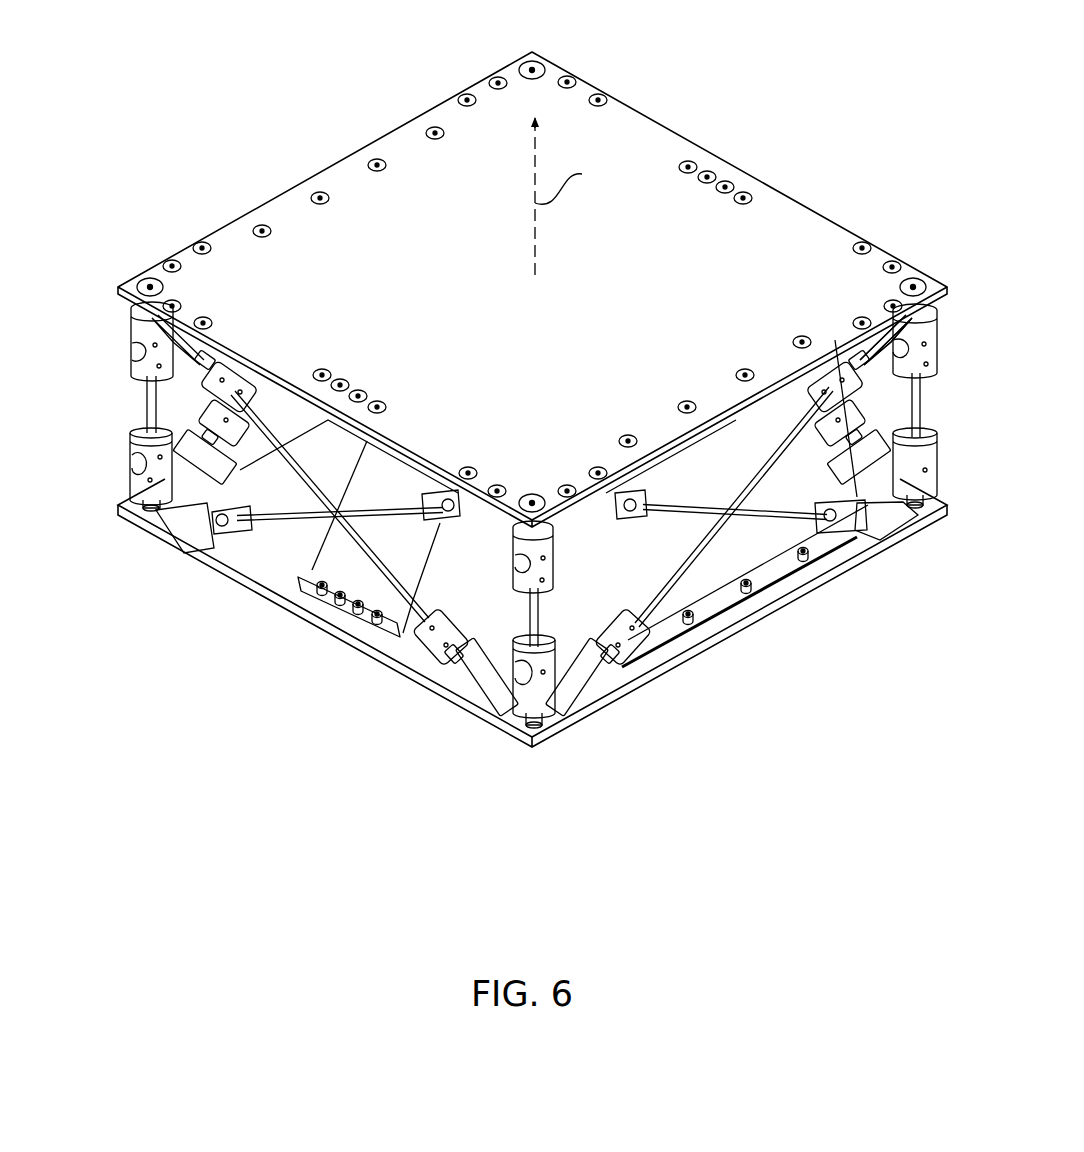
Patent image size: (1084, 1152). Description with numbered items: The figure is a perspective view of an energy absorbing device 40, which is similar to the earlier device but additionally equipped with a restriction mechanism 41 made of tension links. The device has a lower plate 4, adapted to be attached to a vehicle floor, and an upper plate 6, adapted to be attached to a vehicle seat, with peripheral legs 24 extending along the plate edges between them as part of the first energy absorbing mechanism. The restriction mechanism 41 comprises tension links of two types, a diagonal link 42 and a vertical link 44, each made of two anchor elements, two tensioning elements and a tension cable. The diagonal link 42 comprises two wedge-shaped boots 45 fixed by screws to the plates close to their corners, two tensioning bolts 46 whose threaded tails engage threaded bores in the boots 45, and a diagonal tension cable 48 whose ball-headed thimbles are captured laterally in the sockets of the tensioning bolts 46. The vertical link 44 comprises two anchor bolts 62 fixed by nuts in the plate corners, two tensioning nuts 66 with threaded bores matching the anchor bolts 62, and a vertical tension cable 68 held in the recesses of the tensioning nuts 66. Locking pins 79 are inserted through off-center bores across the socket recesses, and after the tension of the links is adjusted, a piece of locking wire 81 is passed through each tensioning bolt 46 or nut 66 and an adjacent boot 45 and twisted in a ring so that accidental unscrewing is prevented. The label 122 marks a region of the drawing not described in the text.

The energy absorbing device 40 is at (764, 80).
The restriction mechanism 41 is at (97, 362).
The diagonal link 42 is at (766, 542).
The vertical link 44 is at (516, 625).
The wedge-shaped boot 45 is at (883, 522).
The tensioning bolt 46 is at (833, 380).
The diagonal tension cable 48 is at (252, 522).
The anchor bolt 62 is at (532, 497).
The tensioning nut 66 is at (527, 692).
The vertical tension cable 68 is at (152, 405).
The locking pin 79 is at (140, 357).
The locking wire 81 is at (118, 513).
The lower plate 4 is at (464, 619).
The upper plate 6 is at (666, 293).
The leg 24 is at (390, 548).
The flexure region 122 is at (608, 581).